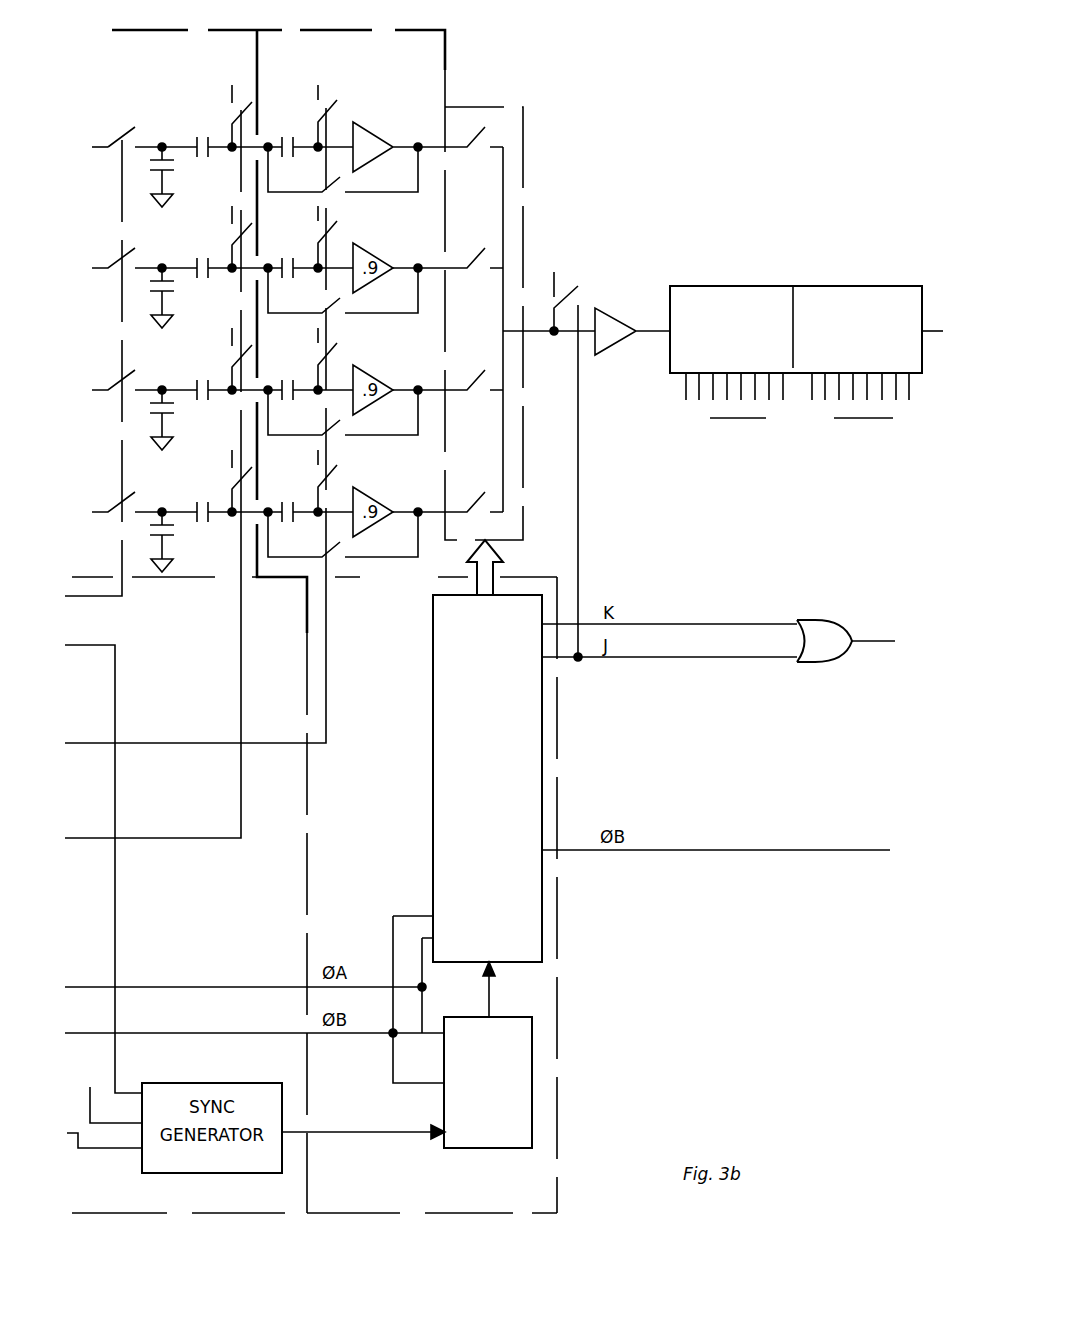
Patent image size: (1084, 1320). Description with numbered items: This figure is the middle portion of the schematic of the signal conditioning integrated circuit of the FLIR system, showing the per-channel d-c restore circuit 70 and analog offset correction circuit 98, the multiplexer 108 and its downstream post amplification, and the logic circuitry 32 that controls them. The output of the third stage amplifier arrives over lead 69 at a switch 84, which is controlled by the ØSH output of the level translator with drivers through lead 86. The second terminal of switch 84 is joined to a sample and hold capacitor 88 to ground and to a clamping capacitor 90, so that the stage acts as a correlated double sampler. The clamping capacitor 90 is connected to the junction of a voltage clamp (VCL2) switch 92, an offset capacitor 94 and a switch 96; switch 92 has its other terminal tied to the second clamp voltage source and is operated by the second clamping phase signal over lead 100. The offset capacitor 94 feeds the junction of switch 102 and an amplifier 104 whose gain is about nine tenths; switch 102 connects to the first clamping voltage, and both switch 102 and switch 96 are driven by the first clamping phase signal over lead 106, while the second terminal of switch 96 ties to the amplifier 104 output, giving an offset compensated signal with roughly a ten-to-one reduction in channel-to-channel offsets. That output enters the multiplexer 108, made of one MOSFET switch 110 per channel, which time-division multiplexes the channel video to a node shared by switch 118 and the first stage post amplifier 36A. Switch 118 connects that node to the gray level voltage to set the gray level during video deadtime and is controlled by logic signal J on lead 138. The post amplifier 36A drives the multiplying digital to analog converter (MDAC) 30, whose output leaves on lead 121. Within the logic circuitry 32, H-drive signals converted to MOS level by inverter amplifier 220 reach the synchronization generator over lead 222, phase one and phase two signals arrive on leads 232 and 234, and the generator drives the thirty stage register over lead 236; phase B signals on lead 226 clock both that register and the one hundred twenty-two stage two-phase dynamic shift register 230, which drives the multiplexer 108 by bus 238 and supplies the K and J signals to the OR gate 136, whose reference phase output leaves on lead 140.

The d-c restore circuit 70 is at (262, 18).
The analog offset correction circuit 98 is at (445, 33).
The switch 84 is at (119, 136).
The lead 69 is at (107, 150).
The sample and hold capacitor 88 is at (150, 167).
The clamping capacitor 90 is at (190, 138).
The voltage clamp (VCL2) switch 92 is at (252, 100).
The offset capacitor 94 is at (286, 162).
The switch 96 is at (344, 189).
The switch 102 is at (337, 100).
The amplifier 104 is at (366, 124).
The multiplexer 108 is at (498, 305).
The multiplex switch (MOSFET) 110 is at (490, 131).
The switch 118 is at (550, 300).
The lead 138 is at (578, 466).
The first stage post amplifier 36A is at (607, 311).
The multiplying digital to analog converter (MDAC) 30 is at (796, 342).
The lead 121 is at (933, 331).
The OR gate 136 is at (800, 623).
The lead 140 is at (880, 642).
The logic circuitry 32 is at (385, 750).
The one hundred twenty-two stage 2Ø dynamic shift register 230 is at (487, 778).
The bus 238 is at (494, 583).
The lead 226 is at (80, 1033).
The inverter amplifier 220 is at (500, 1148).
The lead 236 is at (322, 1132).
The lead 222 is at (100, 648).
The lead 232 is at (88, 1088).
The lead 234 is at (100, 1149).
The lead 86 is at (123, 598).
The lead 106 is at (112, 743).
The lead 100 is at (112, 838).